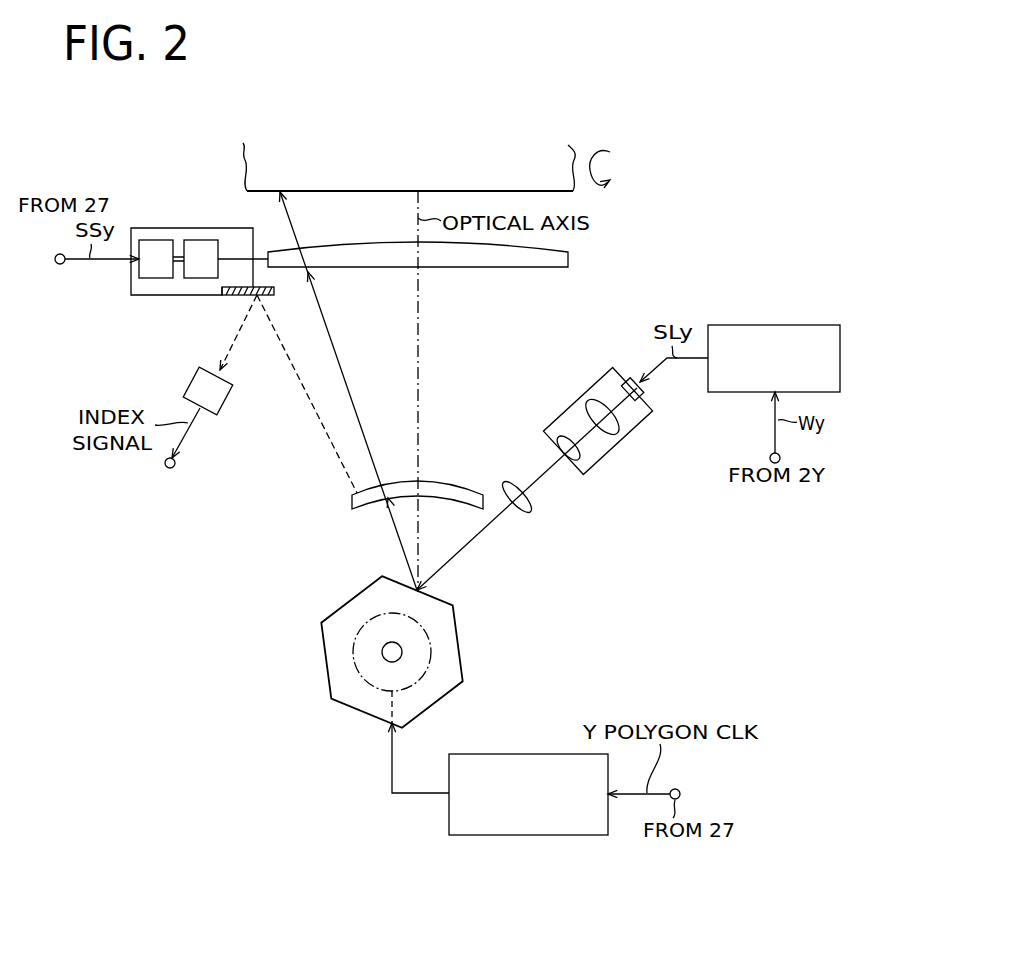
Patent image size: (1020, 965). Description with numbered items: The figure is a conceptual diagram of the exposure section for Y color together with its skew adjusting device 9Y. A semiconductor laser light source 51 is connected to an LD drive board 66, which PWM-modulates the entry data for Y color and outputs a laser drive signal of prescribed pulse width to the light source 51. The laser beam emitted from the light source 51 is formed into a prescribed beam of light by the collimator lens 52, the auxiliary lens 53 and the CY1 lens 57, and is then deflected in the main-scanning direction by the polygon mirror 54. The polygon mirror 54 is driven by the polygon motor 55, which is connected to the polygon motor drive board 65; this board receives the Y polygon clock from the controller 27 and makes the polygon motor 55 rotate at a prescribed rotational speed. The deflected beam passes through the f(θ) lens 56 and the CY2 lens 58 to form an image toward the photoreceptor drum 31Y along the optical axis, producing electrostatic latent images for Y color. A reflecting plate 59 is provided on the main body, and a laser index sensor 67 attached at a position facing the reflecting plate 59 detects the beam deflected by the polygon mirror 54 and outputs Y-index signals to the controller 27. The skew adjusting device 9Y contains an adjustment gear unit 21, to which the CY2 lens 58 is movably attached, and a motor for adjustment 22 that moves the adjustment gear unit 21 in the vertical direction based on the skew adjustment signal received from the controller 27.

The photoreceptor drum 31Y is at (573, 193).
The CY2 lens 58 is at (568, 258).
The f(θ) lens 56 is at (446, 481).
The CY1 lens 57 is at (520, 513).
The collimator lens 52 is at (623, 437).
The semiconductor laser light source 51 is at (626, 378).
The auxiliary lens 53 is at (571, 460).
The LD drive board 66 is at (812, 325).
The polygon mirror 54 is at (458, 638).
The polygon motor 55 is at (353, 657).
The polygon motor drive board 65 is at (537, 754).
The skew adjusting device 9Y is at (127, 290).
The motor for adjustment 22 is at (155, 240).
The adjustment gear unit 21 is at (203, 240).
The reflecting plate 59 is at (230, 297).
The laser index sensor 67 is at (228, 397).
The controller 27 is at (170, 468).